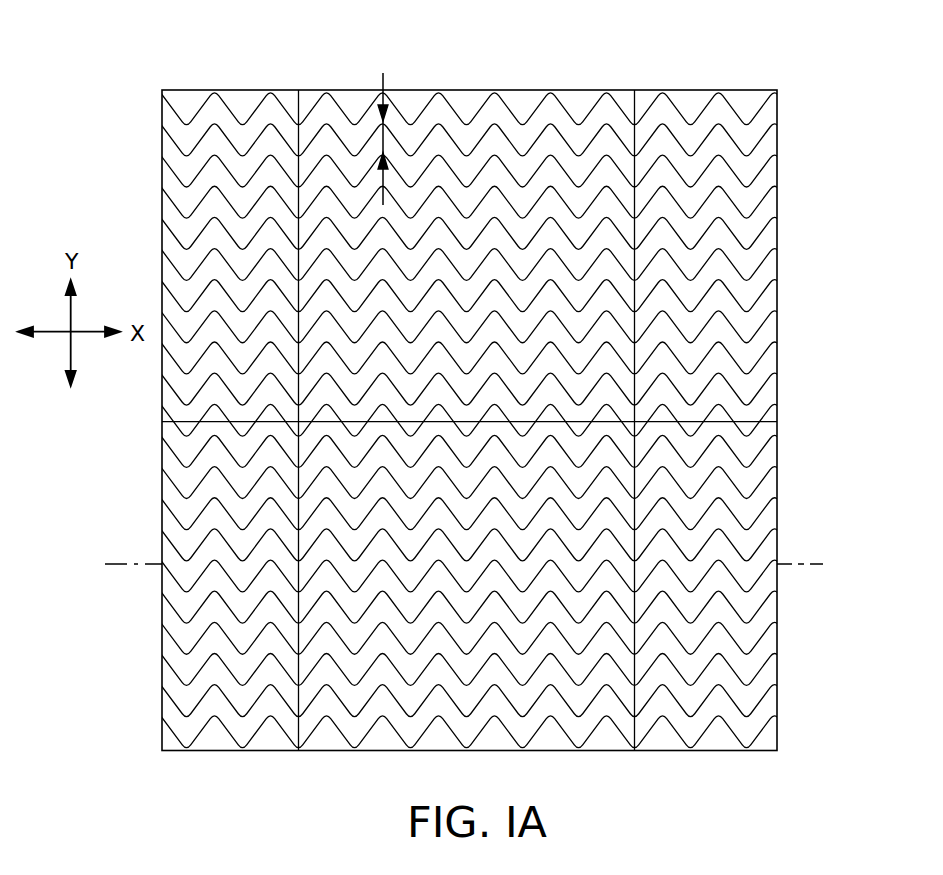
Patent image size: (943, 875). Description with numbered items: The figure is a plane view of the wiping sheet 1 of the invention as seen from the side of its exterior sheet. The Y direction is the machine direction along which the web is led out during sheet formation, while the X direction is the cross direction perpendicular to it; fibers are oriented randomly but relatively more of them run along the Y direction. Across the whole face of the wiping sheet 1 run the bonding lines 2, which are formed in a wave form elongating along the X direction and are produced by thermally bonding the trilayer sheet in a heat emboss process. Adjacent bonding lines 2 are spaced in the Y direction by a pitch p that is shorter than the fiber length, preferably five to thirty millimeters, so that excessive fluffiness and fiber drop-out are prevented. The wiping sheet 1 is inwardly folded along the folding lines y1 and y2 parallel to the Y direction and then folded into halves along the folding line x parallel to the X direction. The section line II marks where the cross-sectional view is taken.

The wiping sheet 1 is at (790, 412).
The bonding lines 2 is at (504, 100).
The pitch p is at (386, 132).
The folding line x is at (166, 440).
The folding line y1 is at (300, 95).
The folding line y2 is at (639, 95).
The section line II- II is at (466, 567).